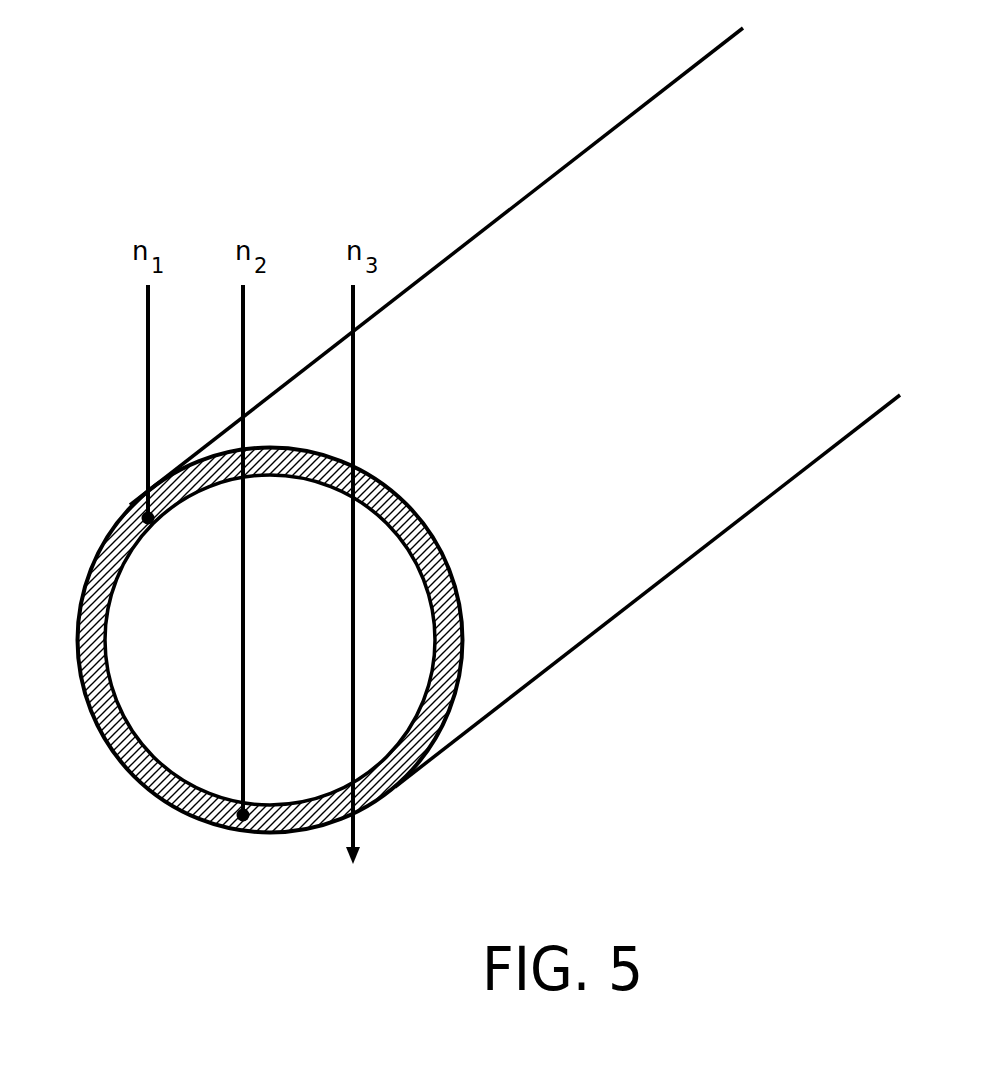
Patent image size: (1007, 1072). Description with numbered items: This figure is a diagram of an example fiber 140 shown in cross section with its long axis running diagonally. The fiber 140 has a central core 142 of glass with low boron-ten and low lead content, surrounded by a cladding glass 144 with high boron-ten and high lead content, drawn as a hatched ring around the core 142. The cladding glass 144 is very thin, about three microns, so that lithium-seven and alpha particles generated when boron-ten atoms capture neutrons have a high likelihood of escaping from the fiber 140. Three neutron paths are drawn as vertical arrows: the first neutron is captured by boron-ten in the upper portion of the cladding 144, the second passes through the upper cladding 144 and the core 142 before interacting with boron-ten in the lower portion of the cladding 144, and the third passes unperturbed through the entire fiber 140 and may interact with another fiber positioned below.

The fiber 140 is at (565, 207).
The core 142 is at (192, 688).
The cladding glass 144 is at (187, 813).